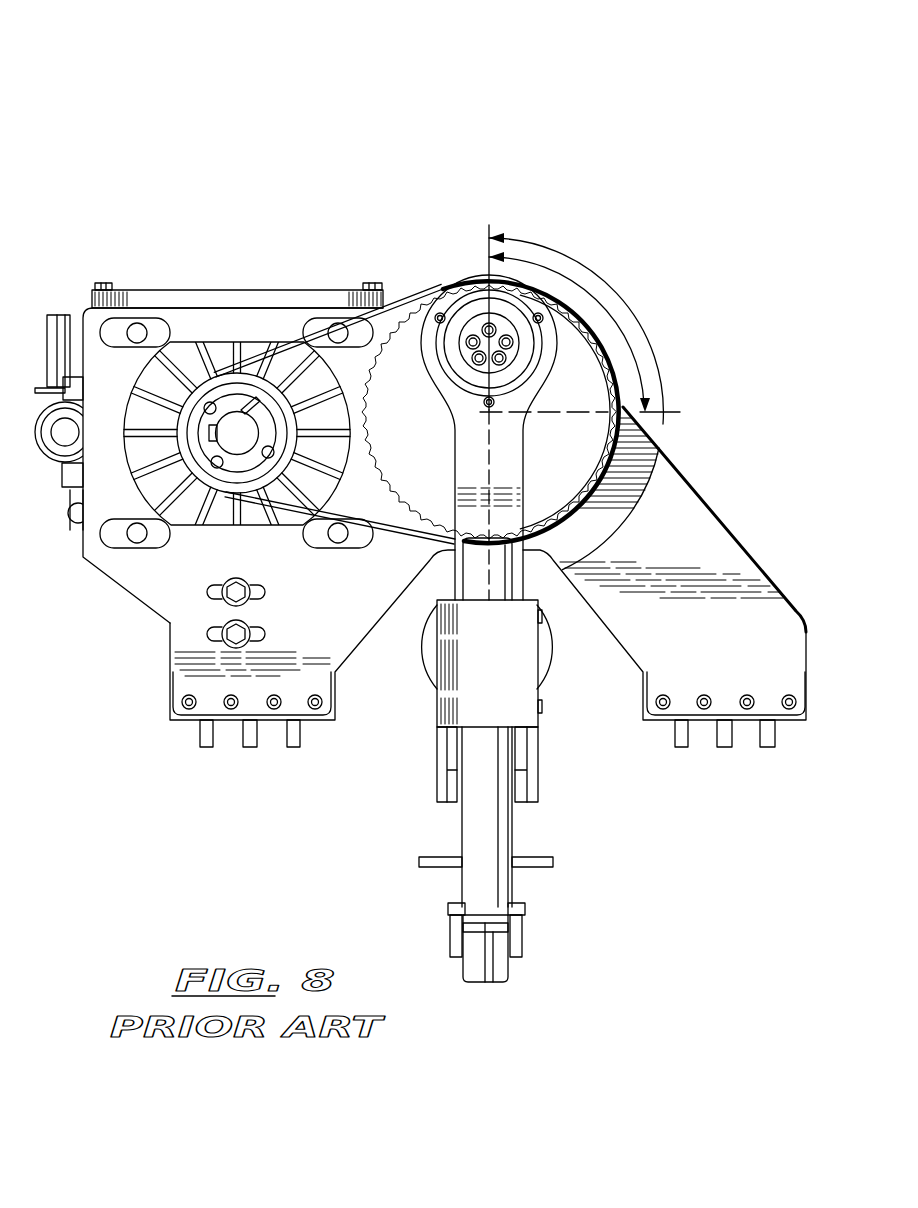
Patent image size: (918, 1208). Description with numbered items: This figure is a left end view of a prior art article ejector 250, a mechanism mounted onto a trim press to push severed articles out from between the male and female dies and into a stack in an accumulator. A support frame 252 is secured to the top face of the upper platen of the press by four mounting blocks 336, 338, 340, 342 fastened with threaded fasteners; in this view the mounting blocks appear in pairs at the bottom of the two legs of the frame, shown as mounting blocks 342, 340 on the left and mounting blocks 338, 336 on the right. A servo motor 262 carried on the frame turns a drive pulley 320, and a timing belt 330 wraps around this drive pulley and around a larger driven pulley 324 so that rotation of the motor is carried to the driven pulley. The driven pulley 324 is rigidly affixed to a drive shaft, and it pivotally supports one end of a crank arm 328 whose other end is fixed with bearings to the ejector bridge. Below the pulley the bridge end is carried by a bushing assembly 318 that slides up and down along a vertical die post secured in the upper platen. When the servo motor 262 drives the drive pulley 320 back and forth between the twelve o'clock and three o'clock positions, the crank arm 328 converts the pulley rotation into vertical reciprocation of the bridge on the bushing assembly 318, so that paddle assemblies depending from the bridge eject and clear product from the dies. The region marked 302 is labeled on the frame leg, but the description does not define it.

The article ejector 250 is at (225, 108).
The servo motor 262 is at (163, 290).
The drive pulley 320 is at (222, 373).
The timing belt 330 is at (405, 303).
The driven pulley 324 is at (577, 352).
The crank arm 328 is at (452, 473).
The bushing assembly 318 is at (510, 679).
The support frame 252 is at (700, 487).
The support plate 302 is at (702, 665).
The mounting block 338 is at (717, 772).
The mounting block 336 is at (725, 733).
The mounting block 342 is at (243, 772).
The mounting block 340 is at (250, 733).